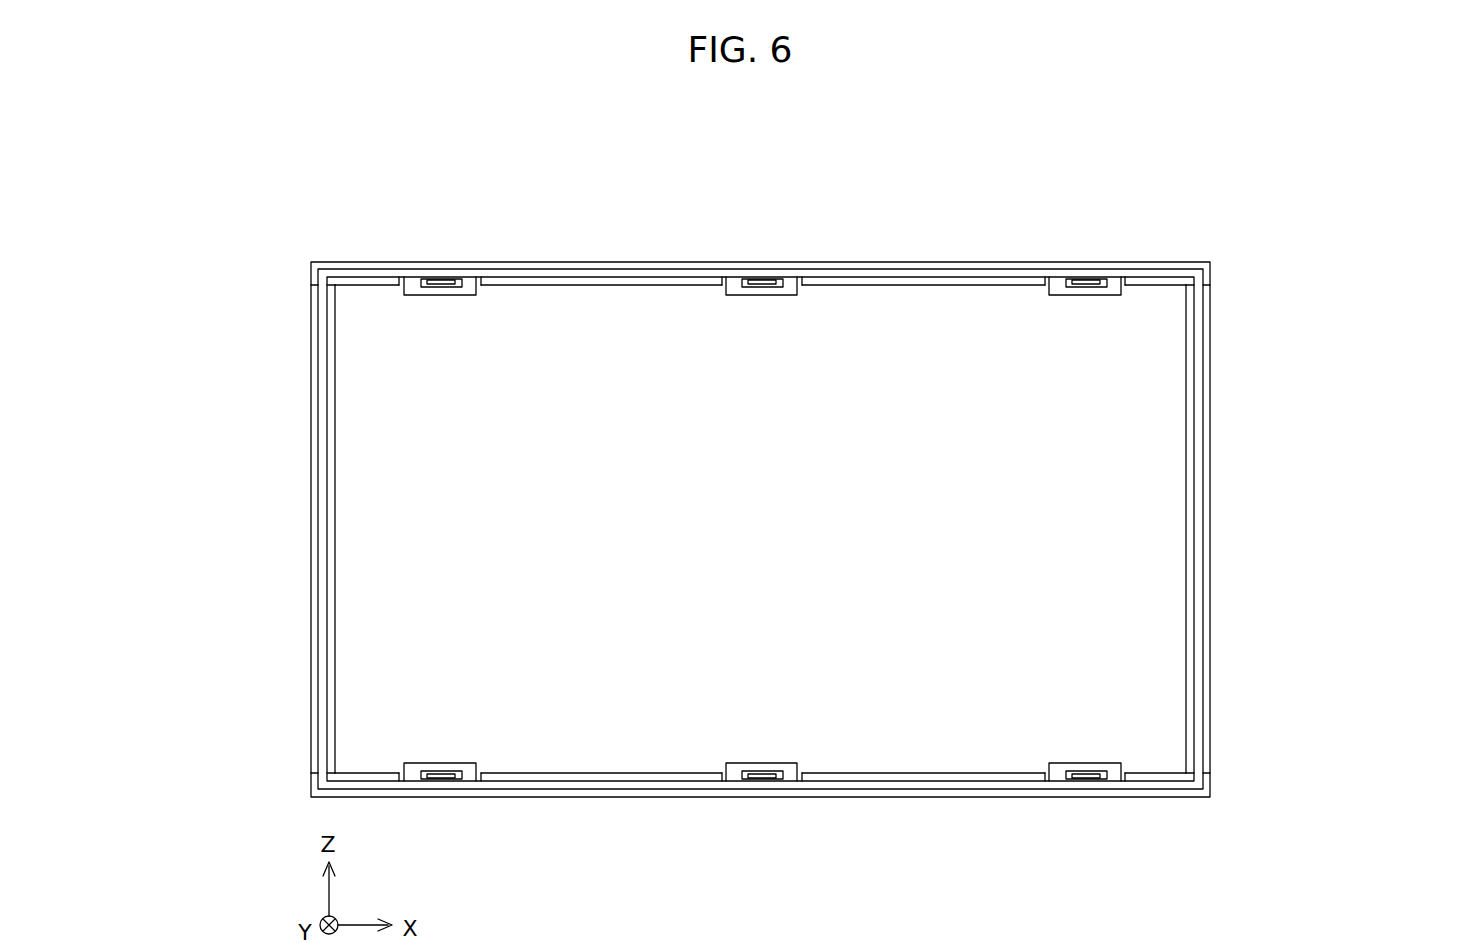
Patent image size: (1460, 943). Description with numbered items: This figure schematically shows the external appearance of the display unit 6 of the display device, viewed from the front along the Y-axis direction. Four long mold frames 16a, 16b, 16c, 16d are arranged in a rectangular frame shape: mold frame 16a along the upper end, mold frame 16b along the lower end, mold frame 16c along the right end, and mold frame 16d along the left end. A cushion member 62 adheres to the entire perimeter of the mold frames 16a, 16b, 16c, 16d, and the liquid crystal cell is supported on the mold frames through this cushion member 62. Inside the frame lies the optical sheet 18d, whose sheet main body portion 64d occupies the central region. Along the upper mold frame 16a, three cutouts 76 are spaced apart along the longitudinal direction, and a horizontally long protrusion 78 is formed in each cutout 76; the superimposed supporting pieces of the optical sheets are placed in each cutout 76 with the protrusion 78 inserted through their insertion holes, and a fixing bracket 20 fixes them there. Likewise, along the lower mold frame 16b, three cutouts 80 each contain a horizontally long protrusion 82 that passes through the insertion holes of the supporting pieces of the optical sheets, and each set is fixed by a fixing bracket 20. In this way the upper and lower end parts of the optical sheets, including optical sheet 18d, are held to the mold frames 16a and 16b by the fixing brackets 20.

The display unit 6 is at (1134, 193).
The mold frame 16a is at (945, 266).
The mold frame 16b is at (905, 795).
The mold frame 16c is at (1203, 619).
The mold frame 16d is at (313, 648).
The optical sheet 18d is at (1158, 490).
The fixing bracket 20 is at (440, 264).
The cushion member 62 is at (1198, 418).
The sheet main body portion 64d is at (362, 559).
The cutout 76 is at (399, 264).
The protrusion 78 is at (440, 293).
The cutout 80 is at (400, 794).
The protrusion 82 is at (440, 762).